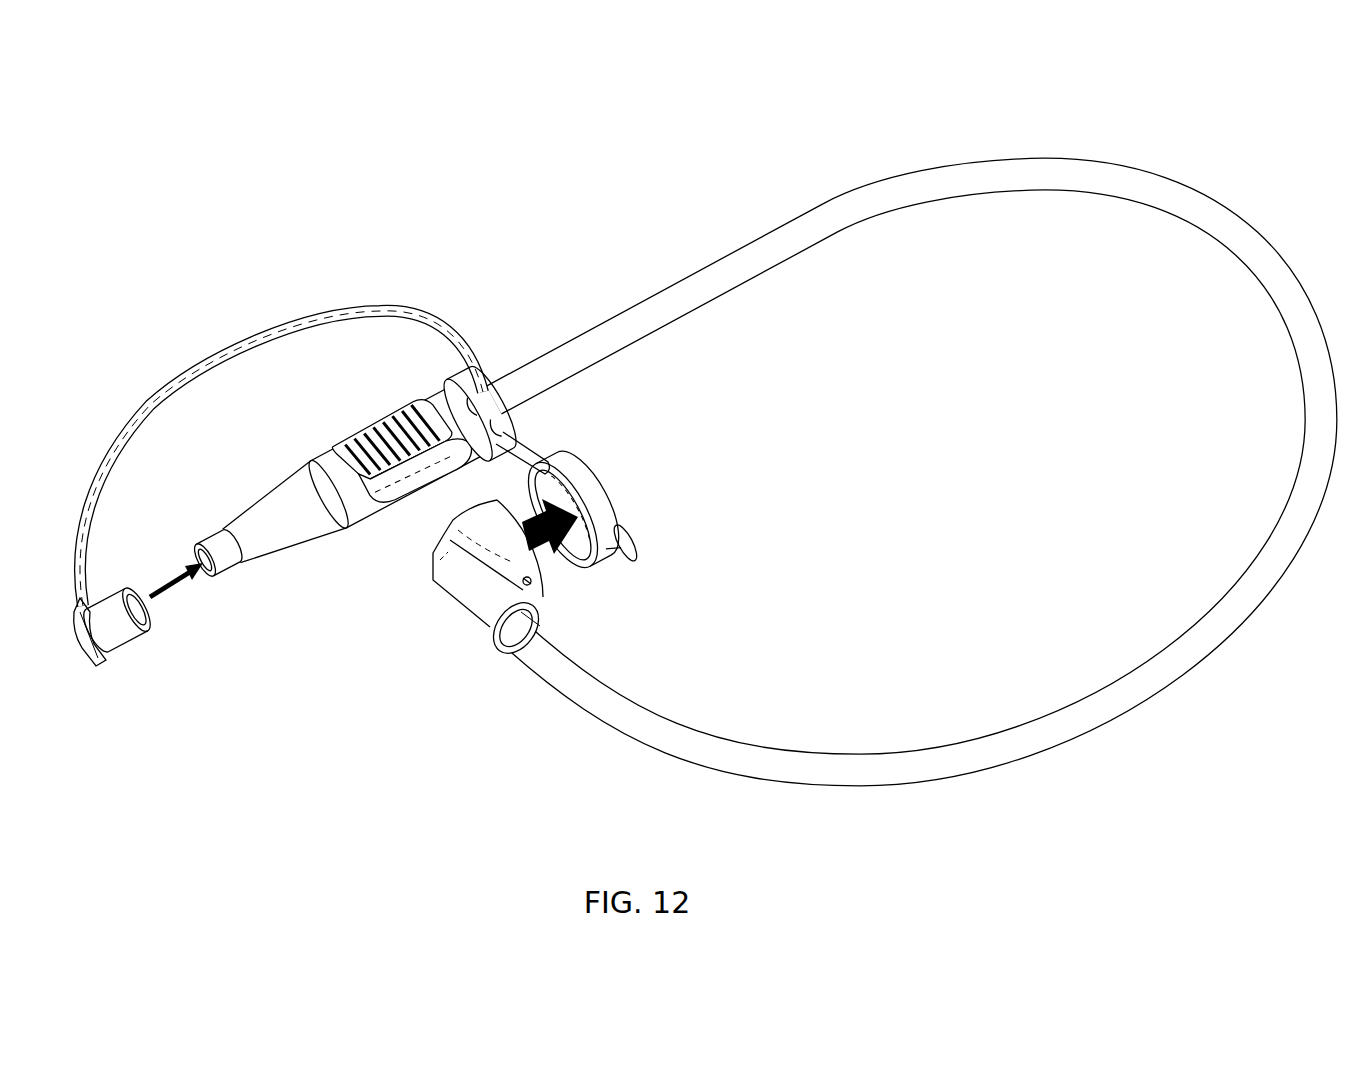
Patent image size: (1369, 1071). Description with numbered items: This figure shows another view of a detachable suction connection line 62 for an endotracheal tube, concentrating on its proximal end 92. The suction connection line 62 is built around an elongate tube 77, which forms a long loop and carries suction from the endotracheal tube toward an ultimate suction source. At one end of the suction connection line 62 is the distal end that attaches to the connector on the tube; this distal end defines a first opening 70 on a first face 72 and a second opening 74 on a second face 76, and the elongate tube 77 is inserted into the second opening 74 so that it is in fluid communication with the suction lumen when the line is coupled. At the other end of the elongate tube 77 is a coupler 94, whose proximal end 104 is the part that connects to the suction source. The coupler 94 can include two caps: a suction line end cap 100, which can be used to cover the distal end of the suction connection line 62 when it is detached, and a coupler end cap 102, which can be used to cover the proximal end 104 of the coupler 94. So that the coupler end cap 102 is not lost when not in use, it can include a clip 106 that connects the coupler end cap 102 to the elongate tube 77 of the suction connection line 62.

The detachable suction connection line 62 is at (498, 606).
The first opening 70 is at (512, 517).
The first face 72 is at (540, 563).
The second opening 74 is at (507, 653).
The second face 76 is at (494, 648).
The elongate tube 77 is at (962, 762).
The proximal end 92 is at (352, 429).
The coupler 94 is at (287, 523).
The suction line end cap 100 is at (590, 497).
The coupler end cap 102 is at (128, 602).
The proximal end 104 is at (222, 560).
The clip 106 is at (114, 660).